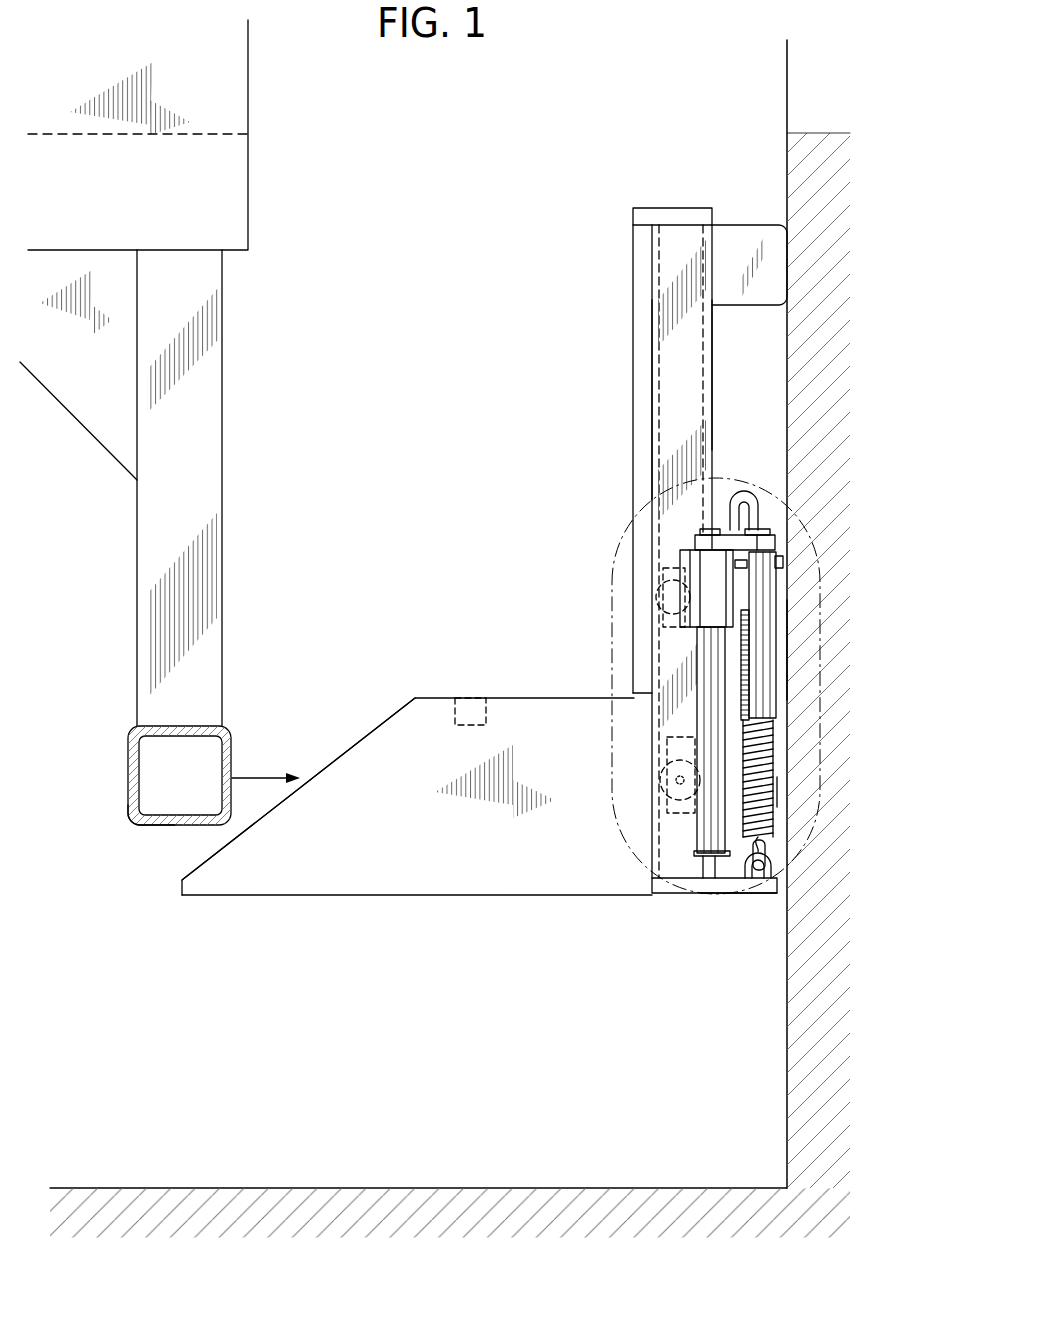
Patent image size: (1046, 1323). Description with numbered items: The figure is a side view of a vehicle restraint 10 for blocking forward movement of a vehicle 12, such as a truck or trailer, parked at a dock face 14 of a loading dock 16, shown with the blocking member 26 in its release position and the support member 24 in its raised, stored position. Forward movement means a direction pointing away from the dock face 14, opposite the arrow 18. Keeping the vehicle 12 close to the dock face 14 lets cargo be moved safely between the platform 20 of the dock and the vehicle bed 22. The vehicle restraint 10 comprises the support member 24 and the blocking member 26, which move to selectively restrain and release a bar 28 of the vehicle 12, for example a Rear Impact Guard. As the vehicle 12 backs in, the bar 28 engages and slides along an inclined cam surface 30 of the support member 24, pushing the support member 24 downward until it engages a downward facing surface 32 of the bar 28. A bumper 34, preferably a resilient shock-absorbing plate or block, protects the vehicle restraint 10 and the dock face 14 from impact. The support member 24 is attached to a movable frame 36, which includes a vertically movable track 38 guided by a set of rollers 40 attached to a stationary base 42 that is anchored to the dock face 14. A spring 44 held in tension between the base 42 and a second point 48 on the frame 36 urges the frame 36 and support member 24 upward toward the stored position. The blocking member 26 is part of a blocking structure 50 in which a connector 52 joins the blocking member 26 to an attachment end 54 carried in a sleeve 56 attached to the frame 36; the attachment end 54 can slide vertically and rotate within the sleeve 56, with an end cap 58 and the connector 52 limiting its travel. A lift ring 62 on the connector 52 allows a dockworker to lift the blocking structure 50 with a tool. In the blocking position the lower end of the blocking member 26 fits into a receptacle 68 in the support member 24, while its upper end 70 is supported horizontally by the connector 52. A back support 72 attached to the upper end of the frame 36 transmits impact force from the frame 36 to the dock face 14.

The vehicle restraint 10 is at (424, 401).
The vehicle 12 is at (248, 193).
The dock face 14 is at (785, 166).
The loading dock 16 is at (633, 1070).
The arrow 18 is at (265, 775).
The platform 20 is at (821, 131).
The vehicle bed 22 is at (211, 133).
The support member 24 is at (507, 698).
The blocking member 26 is at (820, 657).
The bar 28 is at (128, 780).
The inclined cam surface 30 is at (345, 745).
The downward facing surface 32 is at (162, 826).
The bumper 34 is at (633, 343).
The frame 36 is at (712, 388).
The track 38 is at (672, 403).
The rollers 40 is at (675, 637).
The base 42 is at (703, 865).
The spring 44 is at (770, 755).
The second point 48 is at (770, 853).
The blocking structure 50 is at (615, 555).
The connector 52 is at (777, 541).
The attachment end 54 is at (698, 709).
The sleeve 56 is at (685, 593).
The end cap 58 is at (728, 893).
The lift ring 62 is at (738, 490).
The receptacle 68 is at (470, 710).
The upper end 70 is at (775, 560).
The back support 72 is at (770, 225).